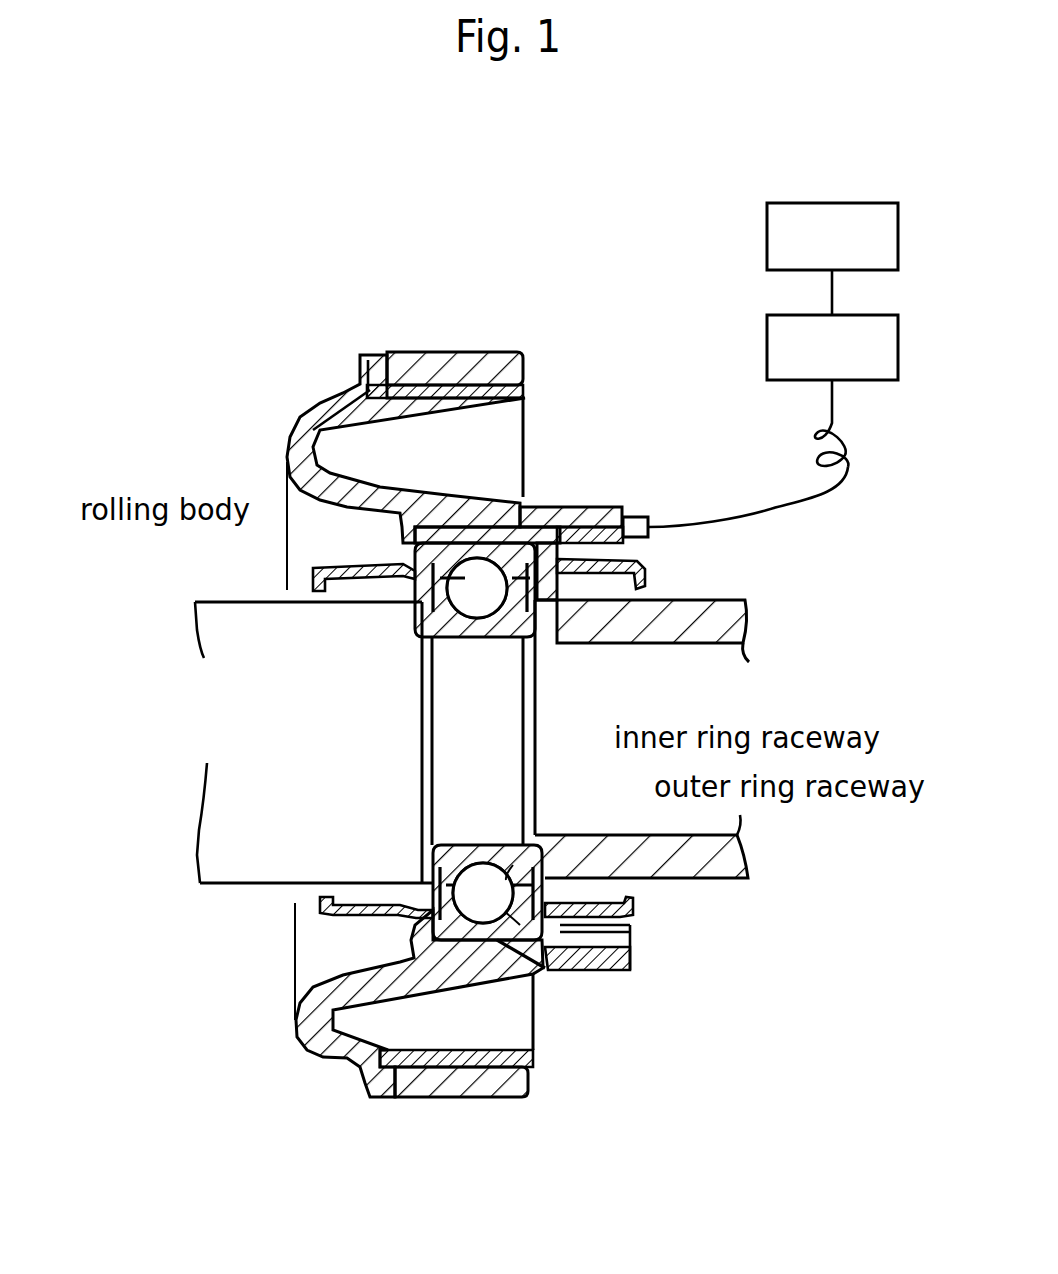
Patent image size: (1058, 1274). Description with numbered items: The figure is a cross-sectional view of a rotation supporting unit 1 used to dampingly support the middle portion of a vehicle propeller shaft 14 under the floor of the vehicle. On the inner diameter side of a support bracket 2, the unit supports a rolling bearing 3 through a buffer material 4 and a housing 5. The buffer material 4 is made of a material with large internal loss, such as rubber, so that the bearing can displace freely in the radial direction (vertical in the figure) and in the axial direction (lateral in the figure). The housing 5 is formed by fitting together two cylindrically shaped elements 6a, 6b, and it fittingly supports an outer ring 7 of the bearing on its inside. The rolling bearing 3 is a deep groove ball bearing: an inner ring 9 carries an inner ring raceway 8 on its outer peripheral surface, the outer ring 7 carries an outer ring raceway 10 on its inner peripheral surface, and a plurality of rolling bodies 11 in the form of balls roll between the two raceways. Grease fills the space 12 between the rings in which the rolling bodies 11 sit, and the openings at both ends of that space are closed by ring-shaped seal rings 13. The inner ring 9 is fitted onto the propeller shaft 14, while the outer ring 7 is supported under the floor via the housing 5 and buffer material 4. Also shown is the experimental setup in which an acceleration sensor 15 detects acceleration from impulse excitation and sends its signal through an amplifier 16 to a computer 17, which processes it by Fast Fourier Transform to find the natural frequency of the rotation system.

The rotation supporting unit 1 is at (510, 340).
The support bracket 2 is at (428, 372).
The rolling bearing 3 is at (413, 541).
The buffer material 4 is at (303, 417).
The housing 5 is at (573, 509).
The element 6a is at (410, 933).
The element 6b is at (570, 925).
The outer ring 7 is at (543, 970).
The inner ring raceway 8 is at (530, 830).
The inner ring 9 is at (483, 860).
The outer ring raceway 10 is at (542, 872).
The rolling body 11 is at (403, 572).
The space 12 is at (641, 576).
The seal ring 13 is at (418, 604).
The propeller shaft 14 is at (230, 622).
The acceleration sensor 15 is at (637, 515).
The amplifier 16 is at (767, 355).
The computer 17 is at (767, 242).